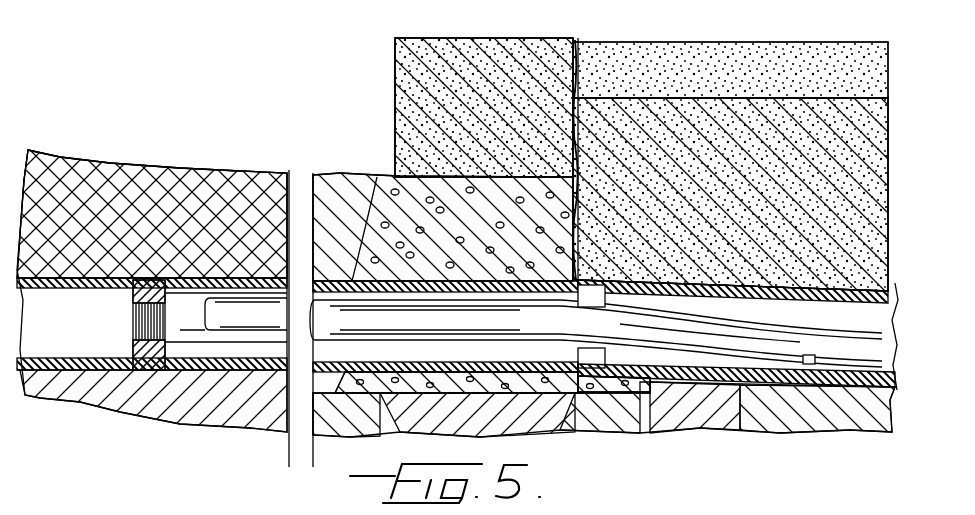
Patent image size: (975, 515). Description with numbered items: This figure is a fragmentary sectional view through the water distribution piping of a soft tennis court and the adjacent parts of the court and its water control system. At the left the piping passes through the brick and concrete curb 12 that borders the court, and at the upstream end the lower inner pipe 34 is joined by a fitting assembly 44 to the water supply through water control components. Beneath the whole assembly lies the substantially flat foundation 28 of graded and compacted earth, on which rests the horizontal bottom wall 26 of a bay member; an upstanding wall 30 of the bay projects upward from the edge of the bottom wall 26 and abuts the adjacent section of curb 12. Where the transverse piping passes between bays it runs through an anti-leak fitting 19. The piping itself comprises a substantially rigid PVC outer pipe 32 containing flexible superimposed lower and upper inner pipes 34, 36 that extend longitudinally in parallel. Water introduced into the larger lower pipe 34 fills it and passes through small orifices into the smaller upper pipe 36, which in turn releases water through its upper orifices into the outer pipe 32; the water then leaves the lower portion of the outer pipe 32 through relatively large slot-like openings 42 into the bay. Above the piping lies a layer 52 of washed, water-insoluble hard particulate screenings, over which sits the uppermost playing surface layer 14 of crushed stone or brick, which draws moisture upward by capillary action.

The curb 12 is at (528, 62).
The playing surface layer 14 is at (765, 58).
The layer of washed hard particulate screenings material 52 is at (790, 112).
The upstanding wall 30 is at (578, 180).
The lower inner pipe 34 is at (866, 348).
The upper inner pipe 36 is at (706, 328).
The fitting 19 is at (576, 370).
The bottom wall 26 is at (642, 376).
The outer pipe 32 is at (750, 378).
The slot-like openings 42 is at (808, 366).
The foundation 28 is at (131, 376).
The fitting assembly 44 is at (272, 372).